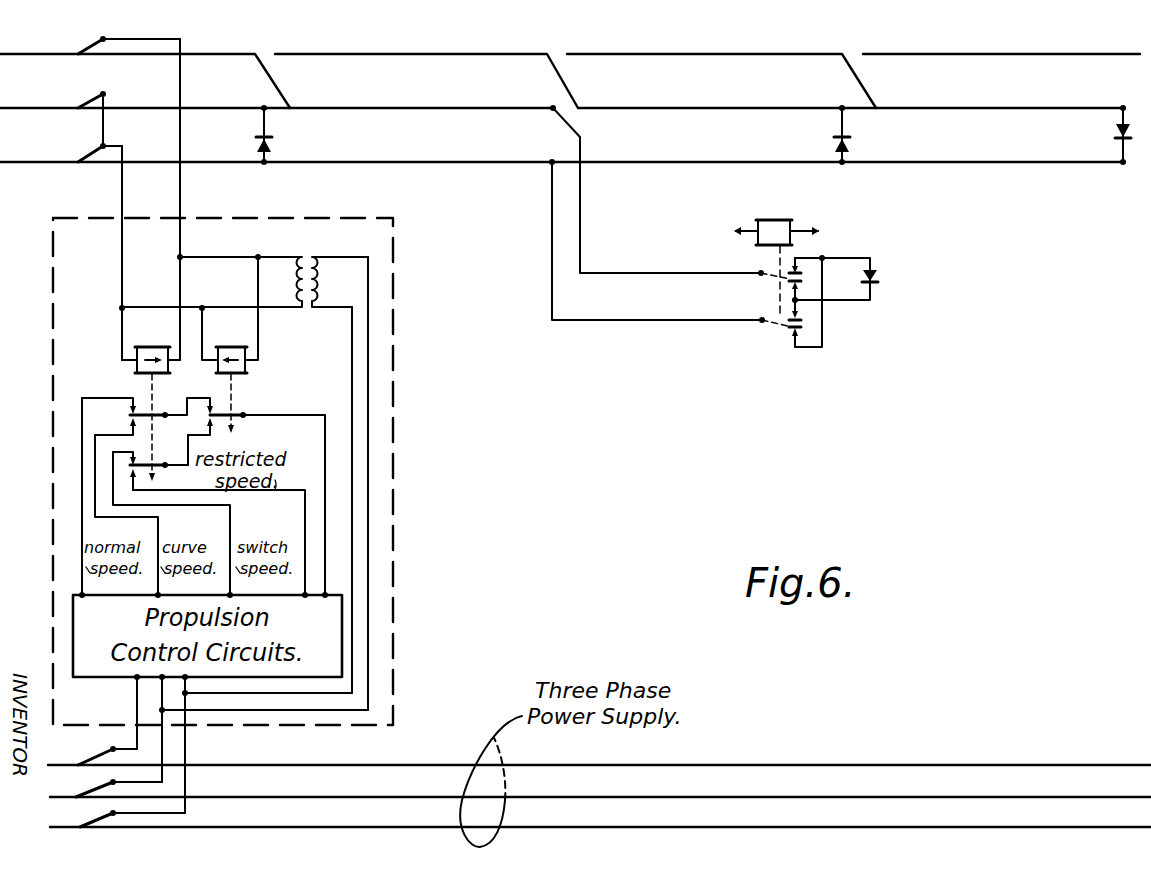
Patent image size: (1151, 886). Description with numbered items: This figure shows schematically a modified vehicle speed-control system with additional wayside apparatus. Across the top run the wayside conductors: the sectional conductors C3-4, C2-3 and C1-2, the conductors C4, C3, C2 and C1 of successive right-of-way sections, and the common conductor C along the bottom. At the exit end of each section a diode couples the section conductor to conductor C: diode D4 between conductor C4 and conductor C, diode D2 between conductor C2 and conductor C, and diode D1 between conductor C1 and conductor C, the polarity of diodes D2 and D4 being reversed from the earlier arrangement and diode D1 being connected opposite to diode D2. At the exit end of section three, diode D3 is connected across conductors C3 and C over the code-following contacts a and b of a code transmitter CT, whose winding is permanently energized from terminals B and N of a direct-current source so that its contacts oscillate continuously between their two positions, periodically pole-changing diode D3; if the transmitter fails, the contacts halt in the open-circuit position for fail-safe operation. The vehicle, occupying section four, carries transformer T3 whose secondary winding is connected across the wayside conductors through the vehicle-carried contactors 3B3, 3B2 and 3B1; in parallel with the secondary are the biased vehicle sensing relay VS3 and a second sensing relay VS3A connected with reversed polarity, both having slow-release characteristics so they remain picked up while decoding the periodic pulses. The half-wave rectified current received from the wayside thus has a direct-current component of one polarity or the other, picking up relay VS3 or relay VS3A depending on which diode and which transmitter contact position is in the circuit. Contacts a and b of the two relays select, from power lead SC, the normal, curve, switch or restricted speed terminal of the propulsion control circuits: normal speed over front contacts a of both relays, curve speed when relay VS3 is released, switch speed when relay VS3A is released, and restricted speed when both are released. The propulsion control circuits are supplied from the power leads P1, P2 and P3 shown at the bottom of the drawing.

The contactor 3B3 is at (76, 50).
The three-position brake switch contact 2 3B2 is at (80, 104).
The contactor 3B1 is at (90, 157).
The wayside conductor C3-4 is at (236, 48).
The wayside conductor C2-3 is at (500, 54).
The wayside conductor C1-2 is at (786, 54).
The conductor C4 is at (243, 106).
The wayside conductor C3 is at (492, 106).
The wayside conductor C2 is at (770, 106).
The wayside conductor C1 is at (1017, 106).
The wayside conductor C is at (492, 158).
The diode D4 is at (254, 140).
The diode D2 is at (830, 138).
The diode D1 is at (1116, 138).
The diode D3 is at (875, 274).
The code transmitter CT is at (772, 256).
The terminal B is at (733, 232).
The terminal N is at (813, 232).
The contact a is at (762, 271).
The contact b is at (762, 320).
The transformer T3 is at (308, 256).
The vehicle sensing relay VS3 is at (151, 401).
The second vehicle sensing relay VS3A is at (230, 345).
The power lead SC is at (305, 413).
The power supply phase line P1 is at (324, 762).
The power supply phase line P2 is at (330, 795).
The power supply phase line P3 is at (330, 826).